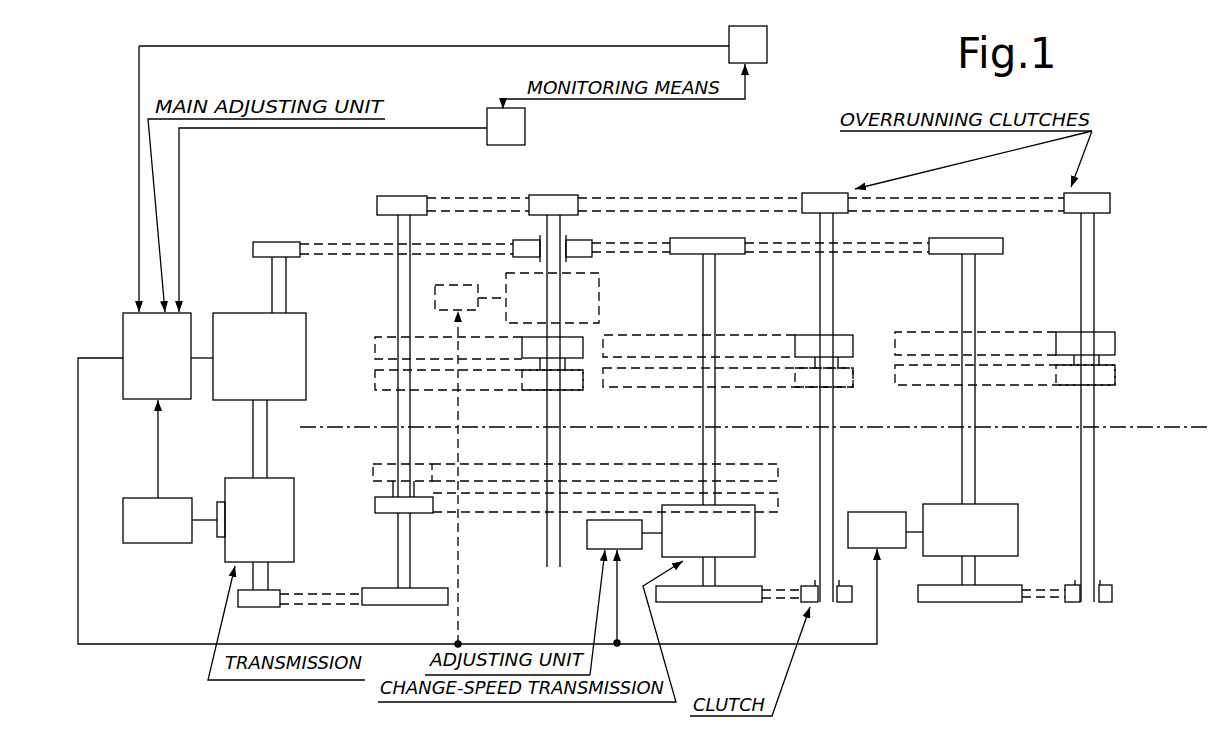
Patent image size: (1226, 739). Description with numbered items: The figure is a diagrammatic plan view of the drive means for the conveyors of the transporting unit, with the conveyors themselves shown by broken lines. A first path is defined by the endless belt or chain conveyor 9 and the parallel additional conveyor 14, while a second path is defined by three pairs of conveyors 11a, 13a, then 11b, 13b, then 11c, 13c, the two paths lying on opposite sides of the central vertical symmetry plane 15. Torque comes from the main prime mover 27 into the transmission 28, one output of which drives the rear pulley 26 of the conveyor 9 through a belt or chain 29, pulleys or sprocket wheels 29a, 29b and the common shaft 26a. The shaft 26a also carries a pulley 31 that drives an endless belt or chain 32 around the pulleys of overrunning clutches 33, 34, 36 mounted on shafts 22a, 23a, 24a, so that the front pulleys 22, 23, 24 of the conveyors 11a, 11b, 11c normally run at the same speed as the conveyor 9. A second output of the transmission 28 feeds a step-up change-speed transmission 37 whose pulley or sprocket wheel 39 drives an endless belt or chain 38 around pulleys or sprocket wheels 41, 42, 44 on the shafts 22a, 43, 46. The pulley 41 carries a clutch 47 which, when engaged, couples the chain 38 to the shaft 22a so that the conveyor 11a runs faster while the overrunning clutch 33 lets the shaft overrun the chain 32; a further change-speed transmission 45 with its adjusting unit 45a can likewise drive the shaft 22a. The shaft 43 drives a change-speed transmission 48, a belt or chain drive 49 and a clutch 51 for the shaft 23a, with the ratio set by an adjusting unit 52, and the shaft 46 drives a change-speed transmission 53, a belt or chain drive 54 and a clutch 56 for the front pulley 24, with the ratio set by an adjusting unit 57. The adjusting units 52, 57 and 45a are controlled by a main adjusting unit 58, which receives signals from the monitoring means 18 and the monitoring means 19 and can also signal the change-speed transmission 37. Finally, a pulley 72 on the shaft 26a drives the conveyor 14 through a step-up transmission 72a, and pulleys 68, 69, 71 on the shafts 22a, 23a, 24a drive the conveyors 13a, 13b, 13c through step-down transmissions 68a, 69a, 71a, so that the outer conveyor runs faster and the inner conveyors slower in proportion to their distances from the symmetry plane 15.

The endless belt or chain conveyor 9 is at (505, 503).
The endless belt or chain conveyor 11a is at (388, 347).
The endless belt or chain conveyor 11b is at (766, 345).
The endless belt or chain conveyor 11c is at (1030, 340).
The conveyor 13a is at (376, 378).
The conveyor 13b is at (625, 378).
The conveyor 13c is at (930, 377).
The additional endless belt conveyor 14 is at (481, 472).
The central vertical symmetry plane 15 is at (330, 430).
The monitoring means 18 is at (512, 131).
The monitoring means 19 is at (761, 45).
The front pulley 22 is at (522, 347).
The shaft 22a is at (562, 445).
The front pulley 23 is at (833, 347).
The shaft 23a is at (835, 410).
The front pulley 24 is at (1103, 341).
The shaft 24a is at (1096, 478).
The rear pulley 26 is at (410, 505).
The shaft 26a is at (404, 555).
The main prime mover 27 is at (156, 530).
The transmission 28 is at (232, 547).
The belt or chain 29 is at (323, 597).
The pulley or sprocket wheel 29a is at (263, 600).
The pulley or sprocket wheel 29b is at (405, 600).
The pulley 31 is at (406, 200).
The endless belt or chain 32 is at (661, 203).
The overrunning clutch 33 is at (557, 205).
The overrunning clutch 34 is at (826, 206).
The overrunning clutch 36 is at (1086, 205).
The change-speed transmission 37 is at (305, 372).
The endless belt or chain 38 is at (336, 258).
The pulley or sprocket wheel 39 is at (279, 252).
The pulley or sprocket wheel 41 is at (583, 245).
The pulley or sprocket wheel 42 is at (734, 256).
The shaft 43 is at (720, 410).
The pulley or sprocket wheel 44 is at (1004, 246).
The change-speed transmission 45 is at (601, 283).
The adjusting unit 45a is at (445, 285).
The shaft 46 is at (977, 441).
The clutch 47 is at (525, 234).
The change-speed transmission 48 is at (740, 536).
The belt or chain drive 49 is at (778, 594).
The clutch 51 is at (830, 607).
The adjusting unit 52 is at (602, 537).
The change-speed transmission 53 is at (1000, 520).
The belt or chain drive 54 is at (1040, 593).
The clutch 56 is at (1102, 610).
The adjusting unit 57 is at (880, 523).
The main adjusting unit 58 is at (137, 350).
The pulley 68 is at (535, 380).
The step-down transmission 68a is at (585, 340).
The pulley 69 is at (808, 380).
The step-down transmission 69a is at (858, 358).
The pulley 71 is at (1117, 376).
The step-down transmission 71a is at (1100, 357).
The pulley 72 is at (423, 472).
The step-up transmission 72a is at (378, 490).